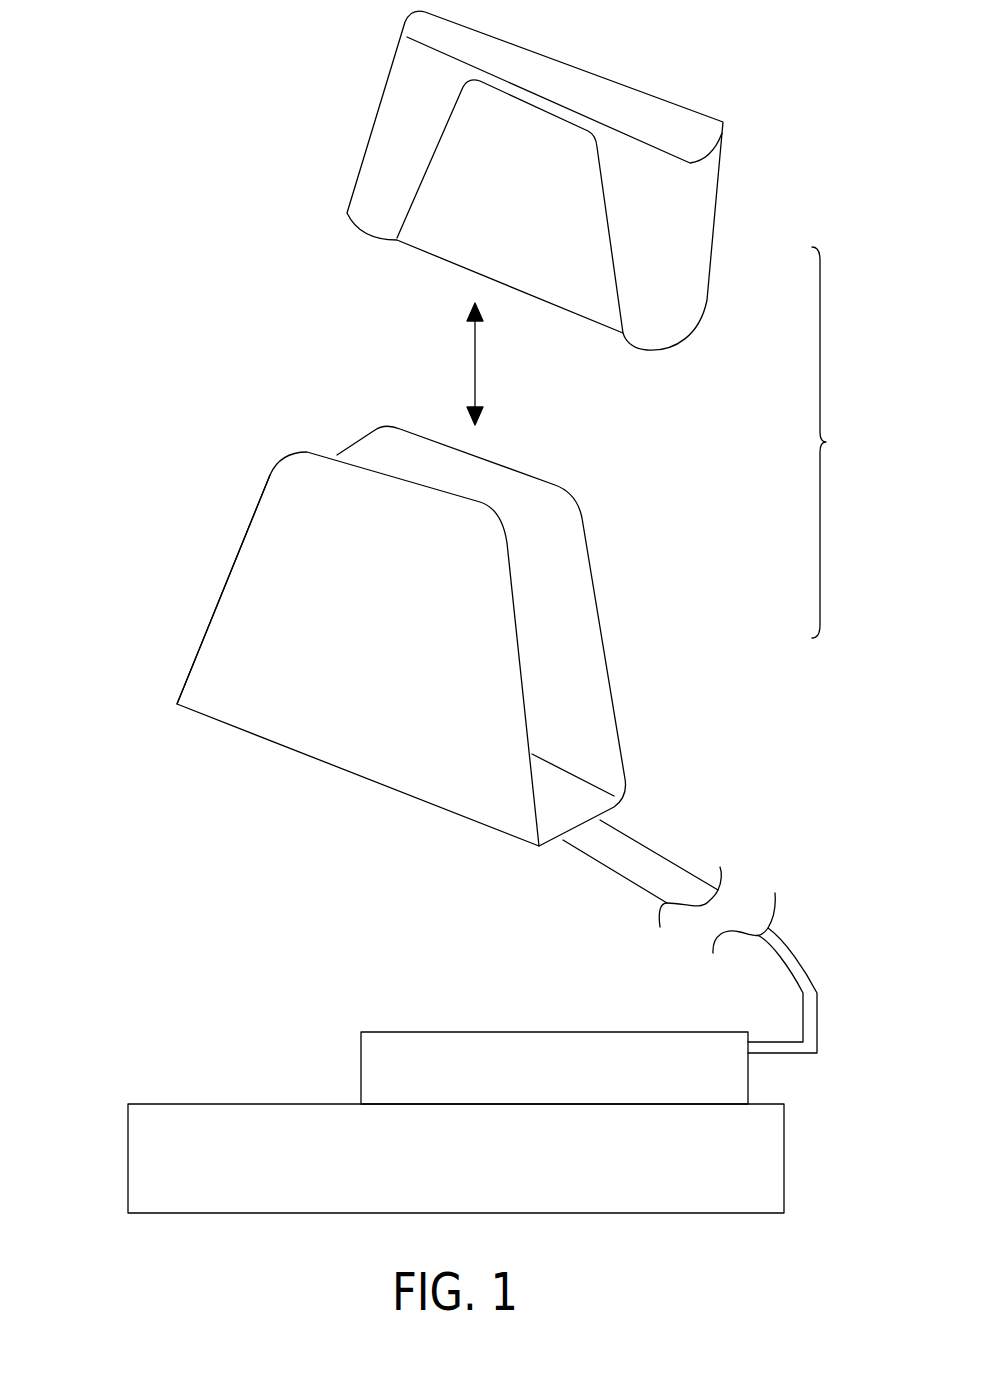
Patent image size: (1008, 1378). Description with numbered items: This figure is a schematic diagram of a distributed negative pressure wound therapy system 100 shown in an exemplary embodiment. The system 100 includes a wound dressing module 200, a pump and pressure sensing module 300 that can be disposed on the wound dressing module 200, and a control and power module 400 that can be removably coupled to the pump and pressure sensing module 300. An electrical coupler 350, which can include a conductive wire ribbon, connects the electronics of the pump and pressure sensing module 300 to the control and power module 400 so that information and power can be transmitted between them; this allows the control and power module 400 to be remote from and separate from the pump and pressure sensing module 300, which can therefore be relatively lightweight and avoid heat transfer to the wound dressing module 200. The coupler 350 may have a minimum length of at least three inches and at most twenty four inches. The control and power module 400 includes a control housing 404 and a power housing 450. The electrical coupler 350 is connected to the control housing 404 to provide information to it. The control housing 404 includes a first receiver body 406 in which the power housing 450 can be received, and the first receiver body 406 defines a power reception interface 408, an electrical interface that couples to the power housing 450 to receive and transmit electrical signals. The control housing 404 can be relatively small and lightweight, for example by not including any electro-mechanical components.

The distributed negative pressure wound therapy system 100 is at (74, 75).
The wound dressing module 200 is at (784, 1157).
The pump and pressure sensing module 300 is at (358, 1067).
The electrical coupler 350 is at (675, 812).
The control and power module 400 is at (670, 442).
The control housing 404 is at (408, 636).
The first receiver body 406 is at (223, 590).
The power reception interface 408 is at (565, 795).
The power housing 450 is at (312, 118).